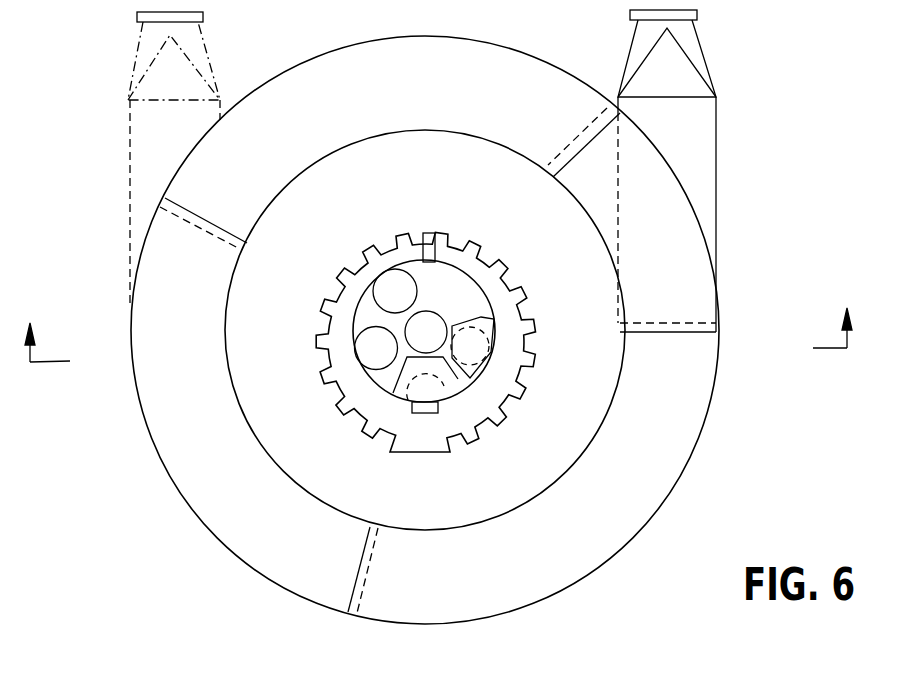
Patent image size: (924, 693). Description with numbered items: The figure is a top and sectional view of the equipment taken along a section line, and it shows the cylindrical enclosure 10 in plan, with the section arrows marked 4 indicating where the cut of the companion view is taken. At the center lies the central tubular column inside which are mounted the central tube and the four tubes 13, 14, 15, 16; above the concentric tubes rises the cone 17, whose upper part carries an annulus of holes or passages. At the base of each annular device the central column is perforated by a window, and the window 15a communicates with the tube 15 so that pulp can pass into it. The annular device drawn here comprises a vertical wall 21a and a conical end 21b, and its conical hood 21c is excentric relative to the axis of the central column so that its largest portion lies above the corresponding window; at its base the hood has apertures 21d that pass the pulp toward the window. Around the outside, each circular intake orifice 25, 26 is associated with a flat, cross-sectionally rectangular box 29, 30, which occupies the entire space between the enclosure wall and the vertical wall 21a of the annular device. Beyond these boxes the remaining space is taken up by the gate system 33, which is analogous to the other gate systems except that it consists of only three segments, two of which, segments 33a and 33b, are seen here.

The cylindrical enclosure 10 is at (715, 388).
The tube 13 is at (390, 290).
The tube 14 is at (363, 353).
The tube 15 is at (412, 413).
The window 15a is at (438, 413).
The tube 16 is at (477, 338).
The cone 17 is at (428, 311).
The vertical wall 21a is at (607, 413).
The conical end 21b is at (588, 428).
The conical hood 21c is at (490, 282).
The apertures 21d is at (445, 237).
The intake orifice 25 is at (697, 16).
The intake orifice 26 is at (140, 17).
The box 29 is at (713, 160).
The box 30 is at (147, 152).
The gate system 33 is at (315, 77).
The segment 33a is at (627, 510).
The segment 33b is at (197, 500).
The section line 4 is at (439, 356).